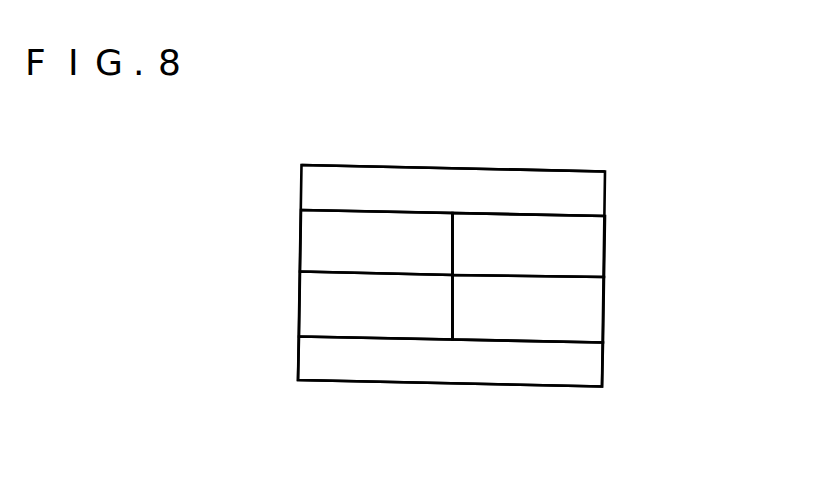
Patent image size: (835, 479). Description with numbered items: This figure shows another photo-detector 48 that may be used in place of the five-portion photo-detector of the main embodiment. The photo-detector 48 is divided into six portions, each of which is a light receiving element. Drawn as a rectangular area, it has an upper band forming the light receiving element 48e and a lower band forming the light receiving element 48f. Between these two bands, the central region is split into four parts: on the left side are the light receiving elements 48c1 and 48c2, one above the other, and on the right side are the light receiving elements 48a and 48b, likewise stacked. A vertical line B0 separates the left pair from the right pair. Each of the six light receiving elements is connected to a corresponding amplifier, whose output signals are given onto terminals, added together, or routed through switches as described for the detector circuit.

The photo-detector 48 is at (288, 178).
The light receiving element 48e is at (467, 178).
The light receiving element 48c1 is at (303, 238).
The light receiving element 48c2 is at (303, 307).
The light receiving element 48a is at (588, 262).
The light receiving element 48b is at (587, 323).
The boundary line B0 is at (543, 273).
The light receiving element 48f is at (445, 372).